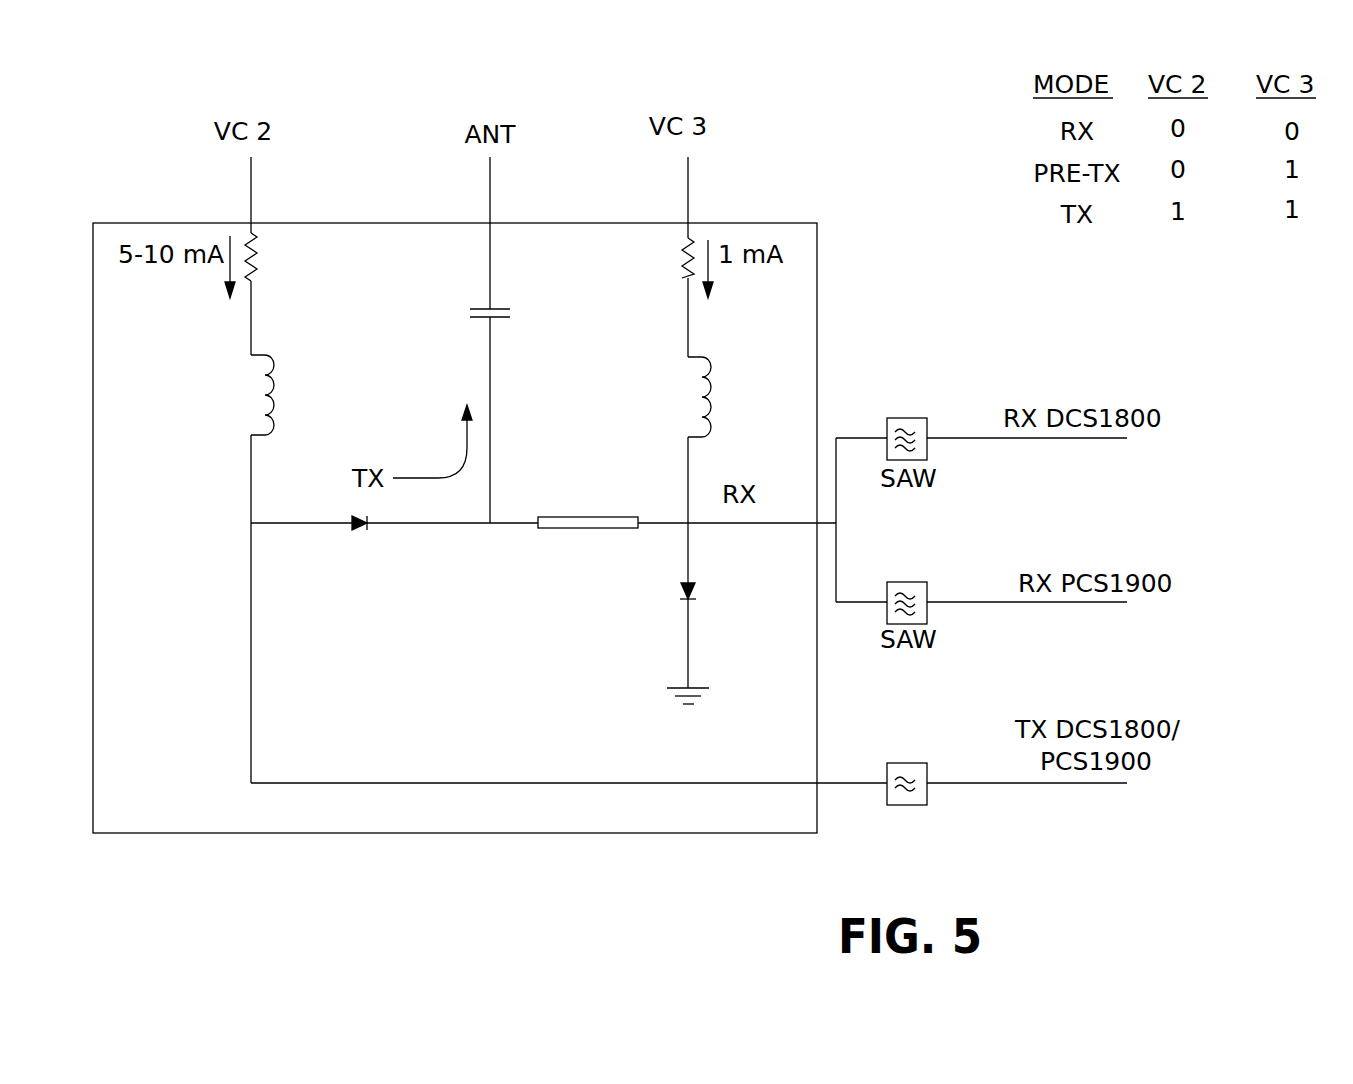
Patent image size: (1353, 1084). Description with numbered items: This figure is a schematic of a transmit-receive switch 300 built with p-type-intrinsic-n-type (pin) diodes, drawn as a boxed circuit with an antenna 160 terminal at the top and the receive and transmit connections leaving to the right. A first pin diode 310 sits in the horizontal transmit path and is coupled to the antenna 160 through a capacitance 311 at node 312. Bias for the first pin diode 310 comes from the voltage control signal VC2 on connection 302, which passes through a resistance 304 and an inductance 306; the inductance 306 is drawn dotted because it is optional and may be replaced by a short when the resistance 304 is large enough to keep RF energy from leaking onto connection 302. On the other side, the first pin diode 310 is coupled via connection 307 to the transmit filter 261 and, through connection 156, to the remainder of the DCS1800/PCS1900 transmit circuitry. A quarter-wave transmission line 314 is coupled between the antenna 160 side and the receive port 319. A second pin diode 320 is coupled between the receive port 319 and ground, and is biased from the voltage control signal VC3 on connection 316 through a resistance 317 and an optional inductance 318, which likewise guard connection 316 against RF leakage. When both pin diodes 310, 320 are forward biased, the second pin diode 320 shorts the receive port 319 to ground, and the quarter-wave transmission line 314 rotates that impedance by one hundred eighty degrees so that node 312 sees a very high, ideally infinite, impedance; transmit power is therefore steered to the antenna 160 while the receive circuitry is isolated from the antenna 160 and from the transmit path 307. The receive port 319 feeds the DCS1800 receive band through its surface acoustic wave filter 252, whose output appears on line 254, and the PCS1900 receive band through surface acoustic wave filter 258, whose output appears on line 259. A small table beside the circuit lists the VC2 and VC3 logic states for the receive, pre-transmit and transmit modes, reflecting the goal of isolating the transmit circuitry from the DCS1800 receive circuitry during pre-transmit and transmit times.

The transmit-receive switch 300 is at (172, 222).
The connection 302 is at (253, 218).
The resistance 304 is at (258, 255).
The inductance 306 is at (282, 385).
The connection 307 is at (250, 548).
The first pin diode 310 is at (348, 563).
The capacitance 311 is at (495, 308).
The node 312 is at (489, 527).
The 1/4 wave transmission line 314 is at (587, 516).
The connection 316 is at (690, 200).
The resistance 317 is at (683, 268).
The inductance 318 is at (718, 390).
The receive port 319 is at (713, 525).
The second pin diode 320 is at (645, 589).
The antenna 160 is at (491, 220).
The surface acoustic wave filter 252 is at (902, 418).
The RX DCS1800 output 254 is at (978, 440).
The surface acoustic wave filter 258 is at (898, 582).
The RX PCS1900 output 259 is at (985, 604).
The transmit filter 261 is at (897, 763).
The connection 156 is at (972, 785).